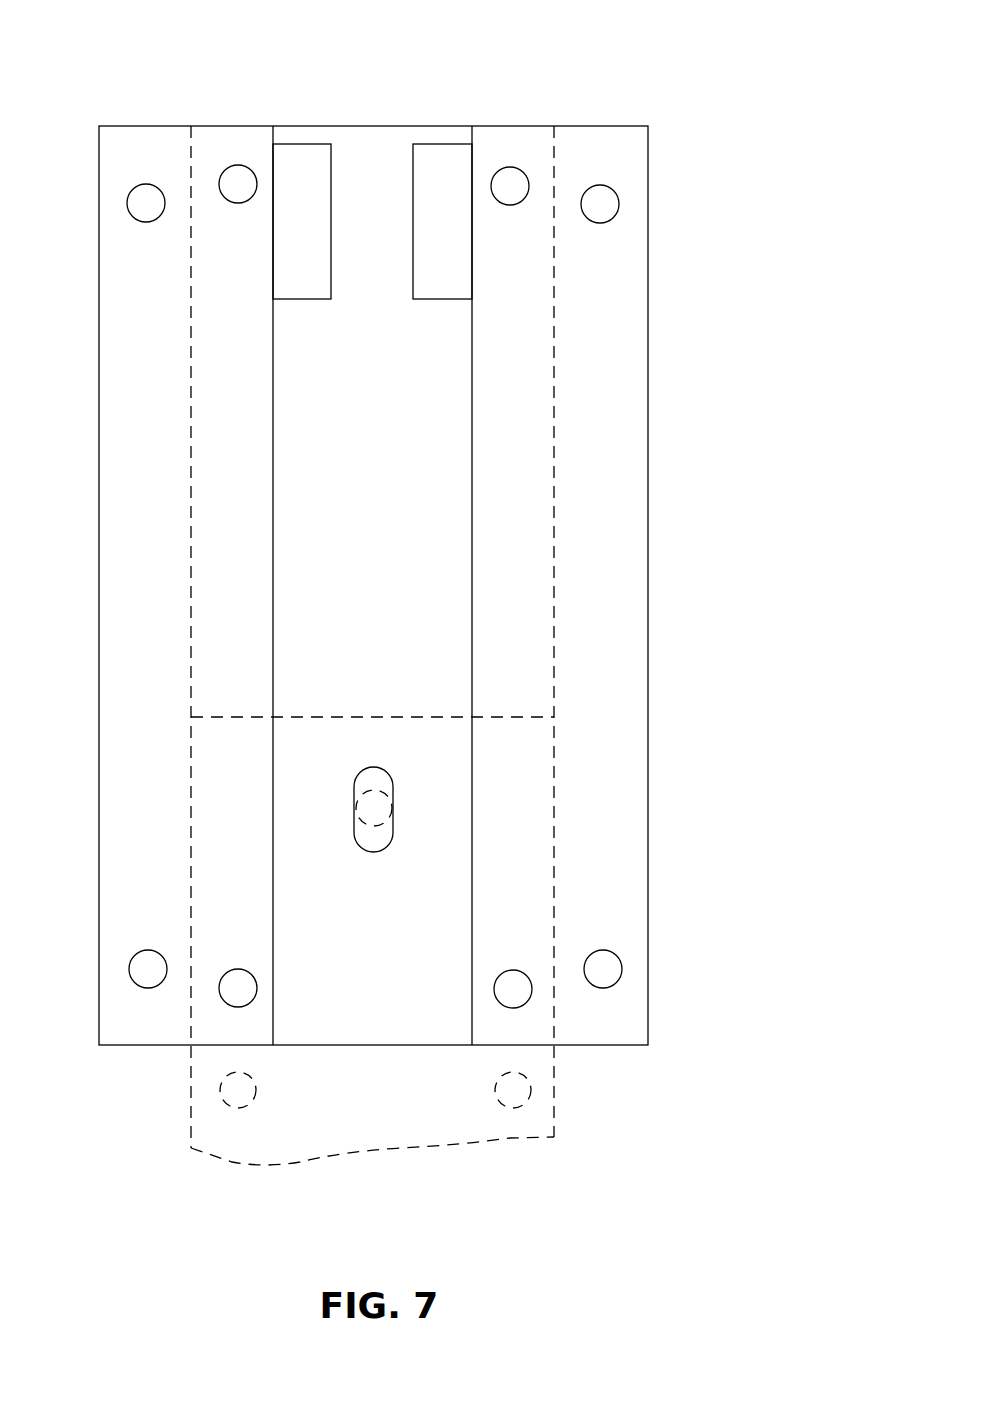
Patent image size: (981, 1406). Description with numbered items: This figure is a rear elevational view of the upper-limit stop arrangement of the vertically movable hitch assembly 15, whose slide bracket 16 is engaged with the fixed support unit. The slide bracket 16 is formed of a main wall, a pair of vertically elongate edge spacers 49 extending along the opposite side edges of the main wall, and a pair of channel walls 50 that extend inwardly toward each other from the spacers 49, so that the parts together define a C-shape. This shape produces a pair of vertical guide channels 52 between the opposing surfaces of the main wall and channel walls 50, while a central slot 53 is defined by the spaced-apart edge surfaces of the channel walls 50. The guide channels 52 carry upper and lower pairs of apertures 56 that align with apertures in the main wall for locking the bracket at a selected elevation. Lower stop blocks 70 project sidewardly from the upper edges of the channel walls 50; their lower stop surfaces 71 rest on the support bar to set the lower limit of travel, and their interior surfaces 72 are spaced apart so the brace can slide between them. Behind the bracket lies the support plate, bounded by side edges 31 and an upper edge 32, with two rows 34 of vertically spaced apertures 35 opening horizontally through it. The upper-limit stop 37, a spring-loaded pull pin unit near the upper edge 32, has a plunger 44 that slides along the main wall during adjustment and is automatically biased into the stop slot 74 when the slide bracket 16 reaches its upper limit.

The hitch assembly 15 is at (698, 104).
The slide bracket 16 is at (126, 120).
The side edge 31 is at (190, 778).
The upper edge 32 is at (523, 715).
The row 34 is at (228, 1177).
The aperture 35 is at (240, 1090).
The upper-limit stop 37 is at (350, 815).
The plunger 44 is at (352, 840).
The edge spacer 49 is at (148, 450).
The channel wall 50 is at (145, 553).
The guide channel 52 is at (193, 160).
The central slot 53 is at (369, 162).
The aperture 56 is at (239, 180).
The stop block 70 is at (303, 150).
The stop surface 71 is at (295, 300).
The interior surface 72 is at (330, 263).
The stop slot 74 is at (370, 845).